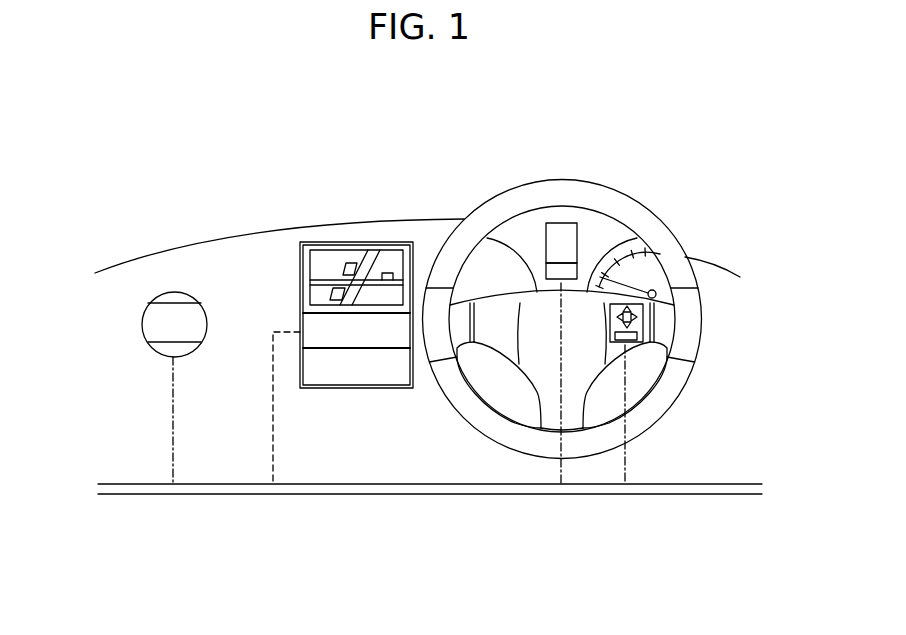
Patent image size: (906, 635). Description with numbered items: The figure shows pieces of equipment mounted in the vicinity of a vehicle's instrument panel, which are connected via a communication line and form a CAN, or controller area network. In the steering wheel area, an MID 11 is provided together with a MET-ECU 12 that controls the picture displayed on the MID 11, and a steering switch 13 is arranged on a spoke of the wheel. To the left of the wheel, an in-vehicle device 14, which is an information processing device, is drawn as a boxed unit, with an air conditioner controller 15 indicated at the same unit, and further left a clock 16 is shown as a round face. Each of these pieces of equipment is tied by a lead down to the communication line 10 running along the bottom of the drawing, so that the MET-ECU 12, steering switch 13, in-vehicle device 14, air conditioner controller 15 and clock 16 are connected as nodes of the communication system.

The communication line 10 is at (455, 494).
The MID 11 is at (560, 245).
The MET-ECU 12 is at (567, 275).
The steering switch 13 is at (632, 320).
The in-vehicle device 14 is at (385, 380).
The air conditioner controller 15 is at (300, 321).
The clock 16 is at (142, 323).